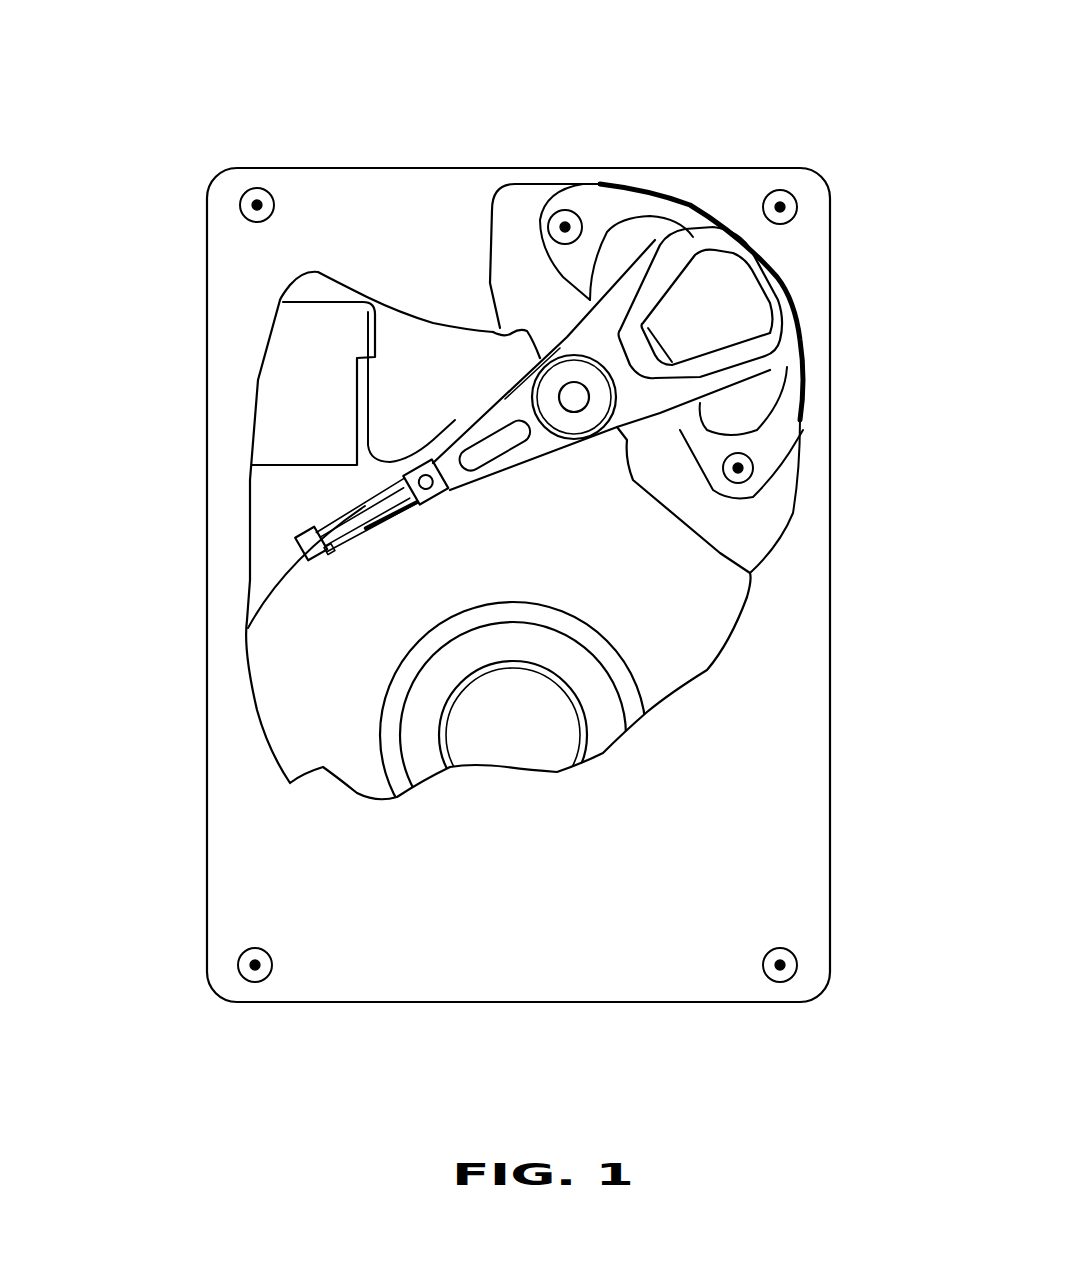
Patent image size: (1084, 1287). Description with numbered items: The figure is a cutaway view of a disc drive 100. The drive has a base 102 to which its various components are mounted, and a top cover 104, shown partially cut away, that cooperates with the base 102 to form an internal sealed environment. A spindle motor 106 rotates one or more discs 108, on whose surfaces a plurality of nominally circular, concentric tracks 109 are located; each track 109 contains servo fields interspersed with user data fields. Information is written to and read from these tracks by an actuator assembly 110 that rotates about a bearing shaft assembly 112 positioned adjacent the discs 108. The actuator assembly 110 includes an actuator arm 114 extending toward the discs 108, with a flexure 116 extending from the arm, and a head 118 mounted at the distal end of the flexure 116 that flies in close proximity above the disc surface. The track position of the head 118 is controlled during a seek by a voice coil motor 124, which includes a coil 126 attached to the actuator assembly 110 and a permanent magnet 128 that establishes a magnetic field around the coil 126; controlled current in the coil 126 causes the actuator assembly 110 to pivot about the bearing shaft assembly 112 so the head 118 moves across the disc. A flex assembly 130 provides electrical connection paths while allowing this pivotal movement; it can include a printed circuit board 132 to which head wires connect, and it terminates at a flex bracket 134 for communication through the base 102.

The disc drive 100 is at (250, 116).
The base 102 is at (282, 528).
The top cover 104 is at (259, 835).
The spindle motor 106 is at (514, 740).
The disc 108 is at (692, 647).
The track 109 is at (380, 712).
The actuator assembly 110 is at (553, 482).
The bearing shaft assembly 112 is at (593, 410).
The actuator arm 114 is at (503, 460).
The flexure 116 is at (367, 523).
The head 118 is at (307, 553).
The voice coil motor 124 is at (603, 172).
The coil 126 is at (773, 303).
The permanent magnet 128 is at (610, 257).
The flex assembly 130 is at (487, 400).
The printed circuit board 132 is at (490, 330).
The flex bracket 134 is at (297, 397).